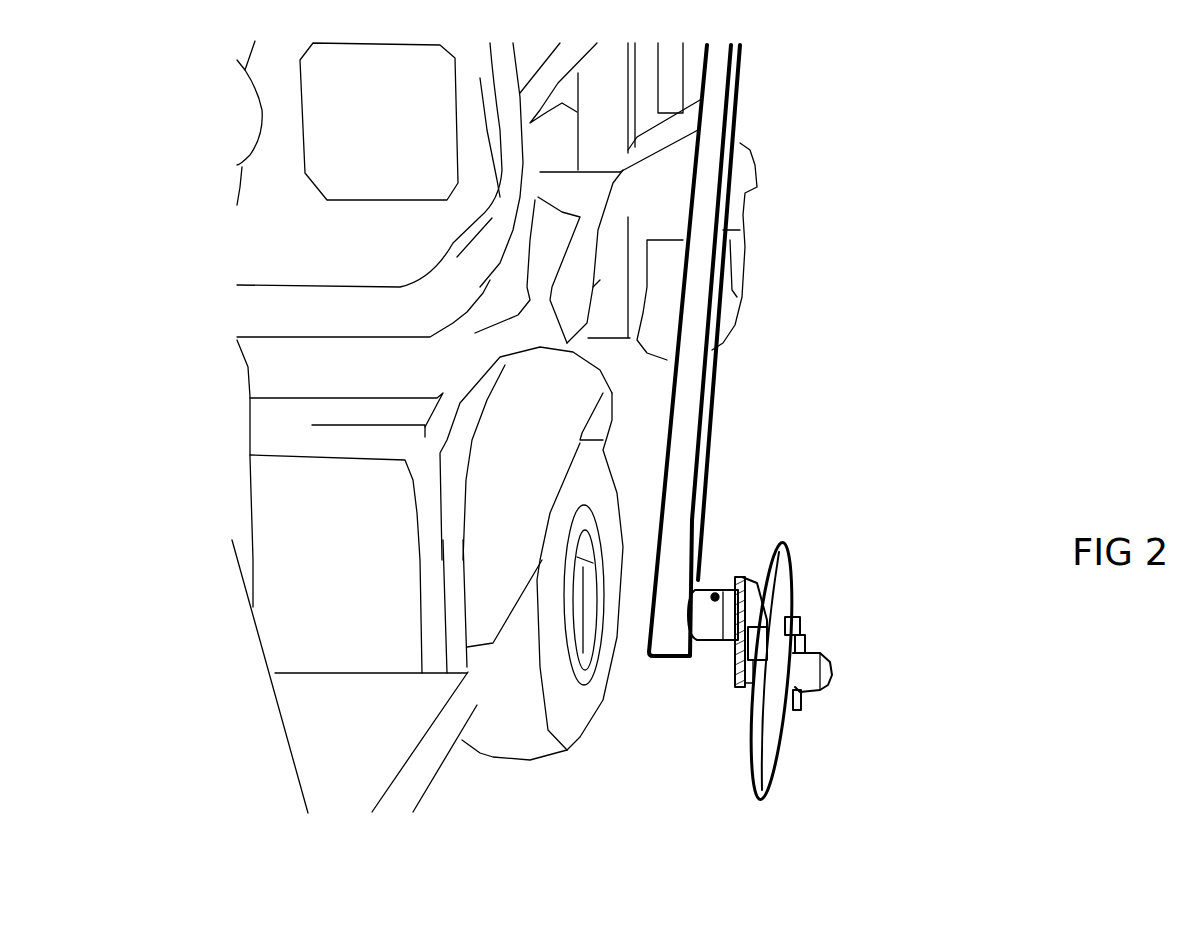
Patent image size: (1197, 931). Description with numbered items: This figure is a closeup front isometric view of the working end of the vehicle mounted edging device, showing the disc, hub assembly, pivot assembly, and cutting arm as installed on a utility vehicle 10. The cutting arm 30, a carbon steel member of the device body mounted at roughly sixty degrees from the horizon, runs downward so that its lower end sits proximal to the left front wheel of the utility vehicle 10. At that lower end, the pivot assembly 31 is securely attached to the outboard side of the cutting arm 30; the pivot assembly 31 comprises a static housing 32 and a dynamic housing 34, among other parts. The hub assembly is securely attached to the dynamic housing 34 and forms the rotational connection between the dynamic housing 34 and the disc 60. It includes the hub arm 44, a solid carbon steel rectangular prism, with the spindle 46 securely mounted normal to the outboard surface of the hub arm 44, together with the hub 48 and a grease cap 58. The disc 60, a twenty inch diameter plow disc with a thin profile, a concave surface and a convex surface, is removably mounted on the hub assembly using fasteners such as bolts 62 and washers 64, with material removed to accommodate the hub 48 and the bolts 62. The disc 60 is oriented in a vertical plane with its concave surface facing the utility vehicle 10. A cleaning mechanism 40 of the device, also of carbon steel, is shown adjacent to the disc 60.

The utility vehicle 10 is at (438, 785).
The cutting arm 30 is at (708, 402).
The pivot assembly 31 is at (713, 583).
The static housing 32 is at (688, 637).
The dynamic housing 34 is at (733, 575).
The cleaning mechanism 40 is at (755, 545).
The hub arm 44 is at (735, 680).
The spindle 46 is at (753, 687).
The hub 48 is at (807, 693).
The grease cap 58 is at (832, 677).
The disc 60 is at (782, 600).
The bolts 62 is at (807, 637).
The washers 64 is at (787, 618).